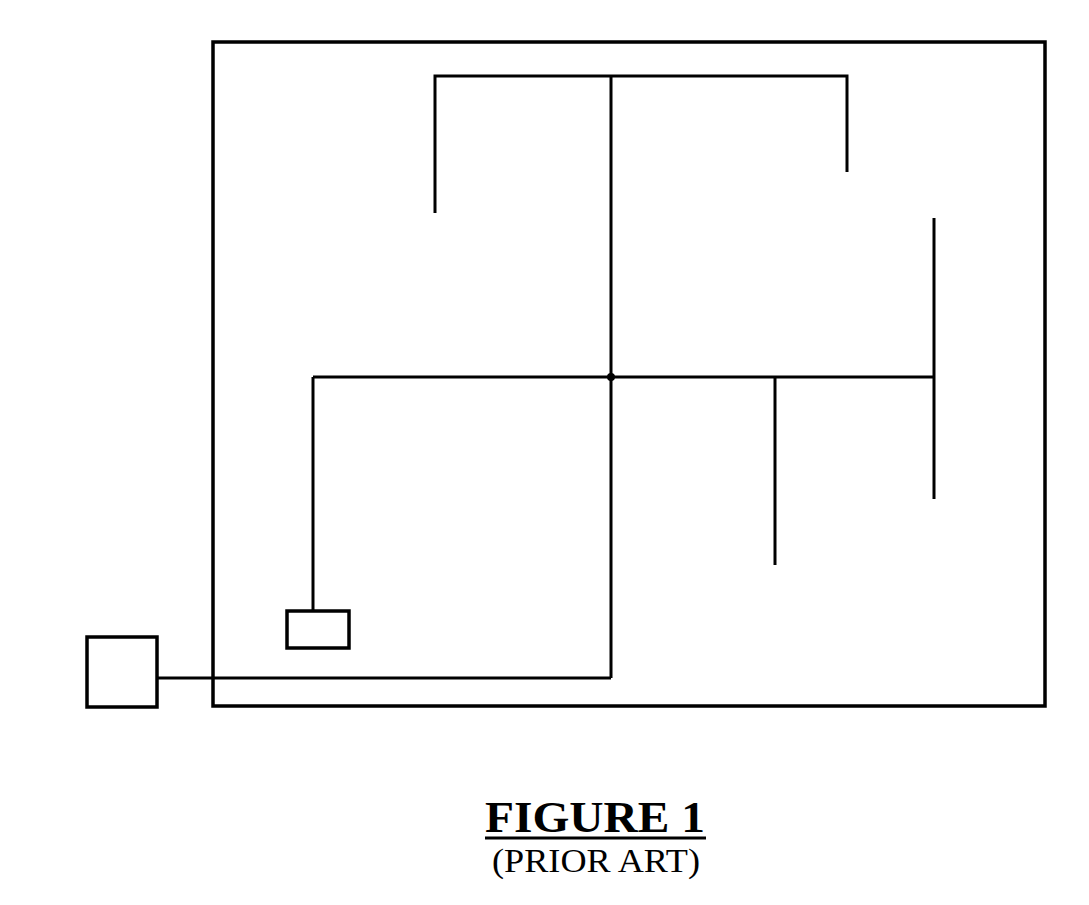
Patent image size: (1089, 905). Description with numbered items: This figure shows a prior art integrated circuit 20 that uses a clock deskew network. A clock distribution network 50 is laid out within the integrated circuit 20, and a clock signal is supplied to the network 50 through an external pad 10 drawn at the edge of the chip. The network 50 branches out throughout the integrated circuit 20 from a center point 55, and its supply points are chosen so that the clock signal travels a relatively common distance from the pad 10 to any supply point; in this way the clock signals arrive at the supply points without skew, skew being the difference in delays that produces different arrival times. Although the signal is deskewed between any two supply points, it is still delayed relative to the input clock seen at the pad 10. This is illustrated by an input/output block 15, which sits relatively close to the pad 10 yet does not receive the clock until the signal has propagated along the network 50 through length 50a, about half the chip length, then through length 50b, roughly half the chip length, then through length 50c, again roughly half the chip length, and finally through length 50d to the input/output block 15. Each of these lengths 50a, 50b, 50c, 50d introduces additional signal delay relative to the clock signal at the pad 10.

The external pad 10 is at (113, 680).
The input/output block 15 is at (330, 628).
The integrated circuit 20 is at (932, 675).
The clock distribution network 50 is at (400, 150).
The length 50a is at (509, 662).
The length 50b is at (633, 533).
The length 50c is at (486, 363).
The length 50d is at (330, 506).
The center point 55 is at (620, 364).